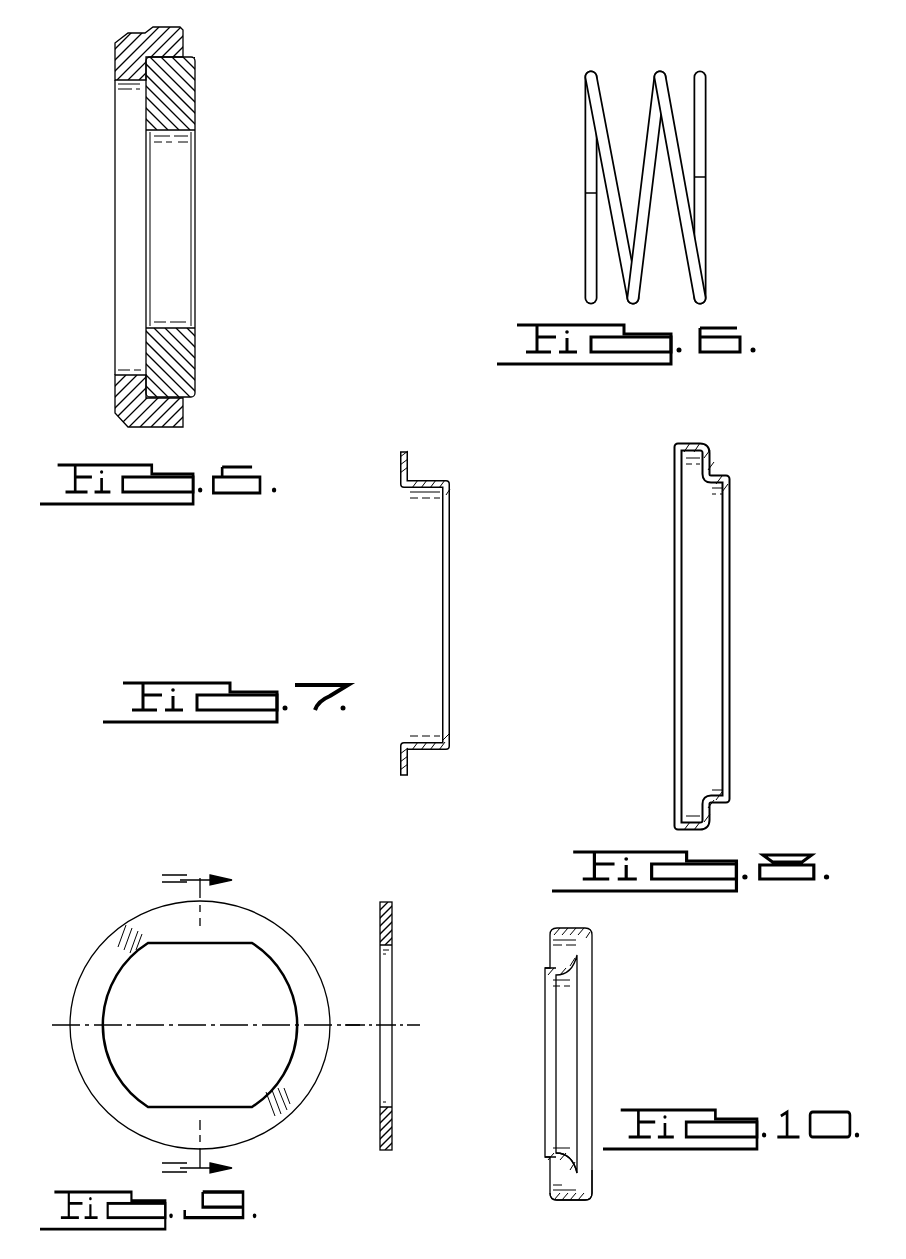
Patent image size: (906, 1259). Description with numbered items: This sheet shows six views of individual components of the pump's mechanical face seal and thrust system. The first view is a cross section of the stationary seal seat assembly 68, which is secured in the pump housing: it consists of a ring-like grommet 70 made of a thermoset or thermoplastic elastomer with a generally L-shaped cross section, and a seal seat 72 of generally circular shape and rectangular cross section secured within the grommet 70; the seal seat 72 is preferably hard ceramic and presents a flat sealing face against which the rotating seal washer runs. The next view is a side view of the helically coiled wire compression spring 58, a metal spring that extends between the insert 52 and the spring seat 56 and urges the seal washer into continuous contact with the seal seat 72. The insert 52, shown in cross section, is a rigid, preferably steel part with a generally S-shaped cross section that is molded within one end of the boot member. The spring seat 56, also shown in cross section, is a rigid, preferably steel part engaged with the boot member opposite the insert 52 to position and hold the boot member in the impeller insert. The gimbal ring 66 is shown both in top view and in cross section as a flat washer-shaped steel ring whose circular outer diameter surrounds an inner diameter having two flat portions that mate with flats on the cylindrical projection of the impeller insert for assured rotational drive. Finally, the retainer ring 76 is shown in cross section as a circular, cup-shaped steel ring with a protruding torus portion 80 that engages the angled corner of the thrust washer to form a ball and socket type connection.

In FIG. 7, the insert 52 is at (452, 487).
In FIG. 8, the spring seat 56 is at (712, 462).
In FIG. 6, the helically coiled wire compression spring 58 is at (705, 82).
In FIG. 9, the gimbal ring 66 is at (273, 940).
In FIG. 5, the seal seat assembly 68 is at (218, 50).
In FIG. 5, the grommet 70 is at (128, 53).
In FIG. 5, the seal seat 72 is at (180, 107).
In FIG. 10, the retainer ring 76 is at (580, 970).
In FIG. 10, the protruding torus portion 80 is at (592, 1192).